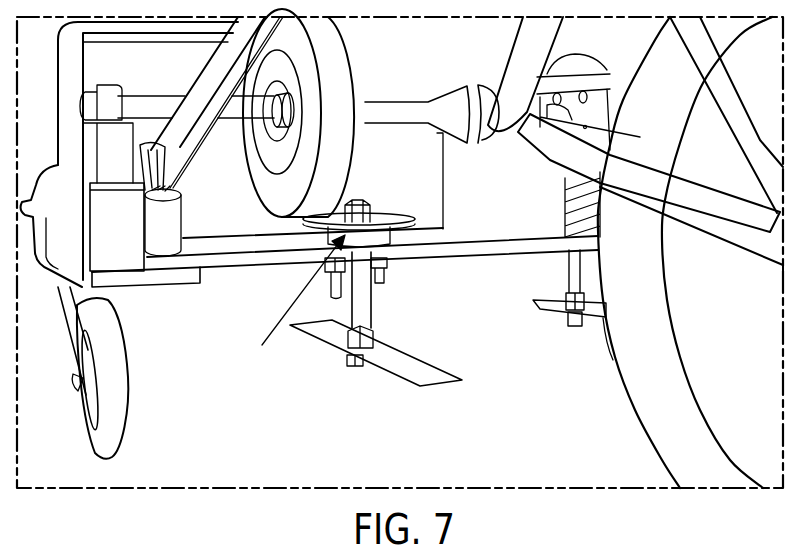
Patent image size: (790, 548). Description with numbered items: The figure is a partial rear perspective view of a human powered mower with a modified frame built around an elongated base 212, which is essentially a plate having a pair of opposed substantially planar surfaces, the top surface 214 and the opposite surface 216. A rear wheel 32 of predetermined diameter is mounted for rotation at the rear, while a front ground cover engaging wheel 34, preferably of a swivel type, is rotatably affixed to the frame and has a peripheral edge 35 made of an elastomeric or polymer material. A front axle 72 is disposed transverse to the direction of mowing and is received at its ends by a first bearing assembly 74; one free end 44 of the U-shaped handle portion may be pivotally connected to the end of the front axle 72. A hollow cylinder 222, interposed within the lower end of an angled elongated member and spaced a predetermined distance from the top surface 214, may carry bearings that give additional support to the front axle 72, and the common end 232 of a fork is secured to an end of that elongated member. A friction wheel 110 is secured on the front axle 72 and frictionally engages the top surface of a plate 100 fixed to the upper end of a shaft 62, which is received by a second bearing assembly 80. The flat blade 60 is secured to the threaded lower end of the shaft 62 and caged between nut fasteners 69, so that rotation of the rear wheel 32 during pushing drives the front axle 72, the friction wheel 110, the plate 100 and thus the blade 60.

The rear wheel 32 is at (655, 410).
The front ground cover engaging wheel 34 is at (93, 417).
The peripheral edge 35 is at (114, 437).
The free end 44 is at (178, 150).
The blade 60 is at (413, 372).
The shaft 62 is at (367, 297).
The nut fastener 69 is at (358, 358).
The front axle 72 is at (157, 92).
The first bearing assembly 74 is at (99, 84).
The second bearing assembly 80 is at (262, 345).
The plate 100 is at (390, 217).
The friction wheel 110 is at (347, 78).
The elongated base 212 is at (473, 248).
The top surface 214 is at (250, 234).
The planar surface 216 is at (274, 262).
The hollow cylinder 222 is at (487, 94).
The common end 232 is at (547, 142).